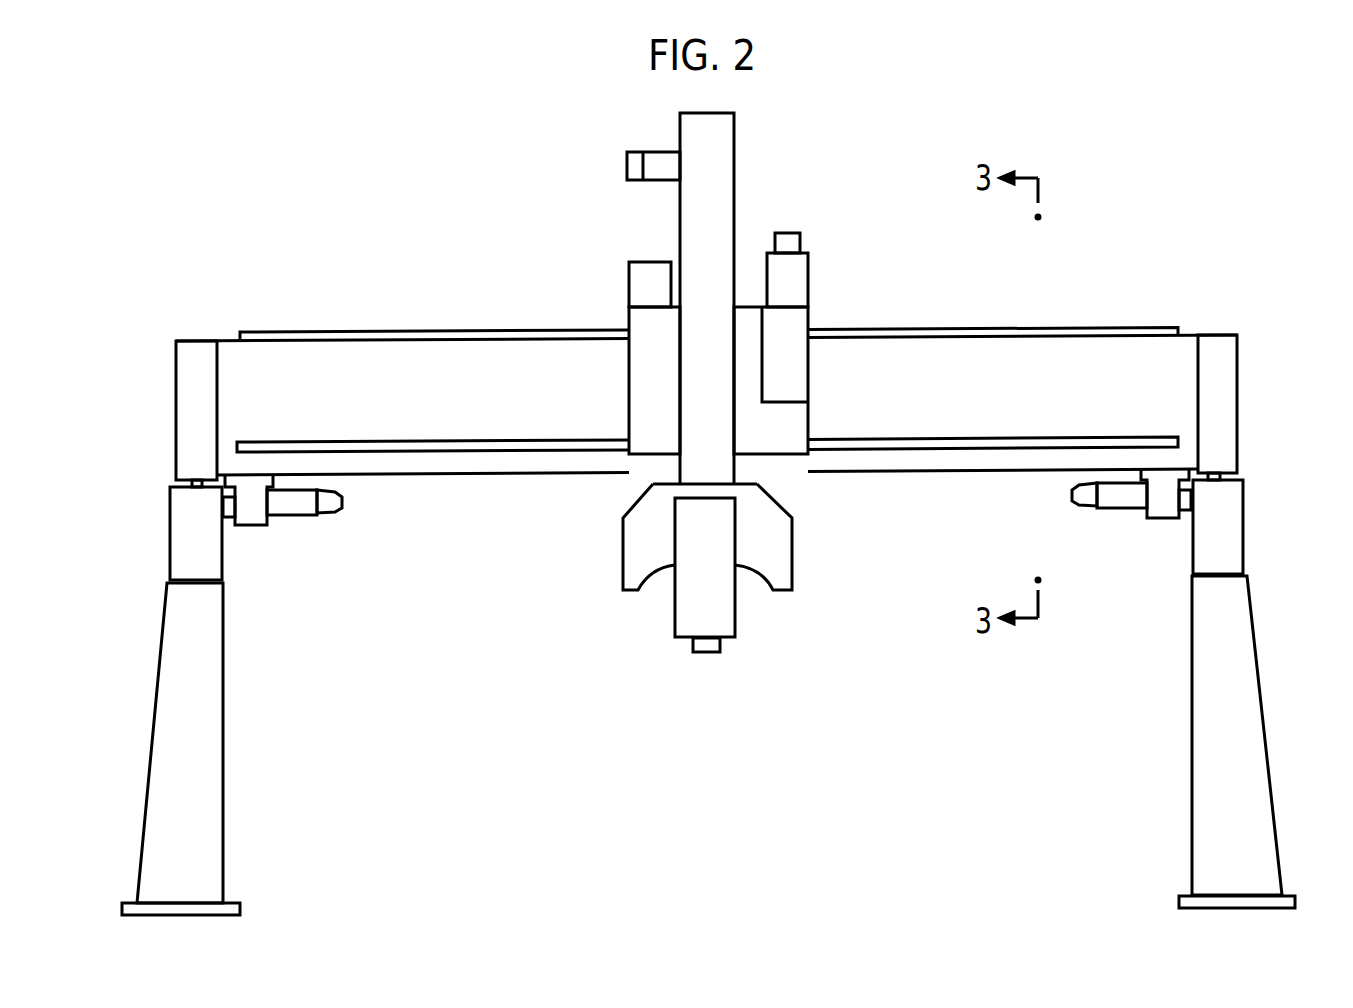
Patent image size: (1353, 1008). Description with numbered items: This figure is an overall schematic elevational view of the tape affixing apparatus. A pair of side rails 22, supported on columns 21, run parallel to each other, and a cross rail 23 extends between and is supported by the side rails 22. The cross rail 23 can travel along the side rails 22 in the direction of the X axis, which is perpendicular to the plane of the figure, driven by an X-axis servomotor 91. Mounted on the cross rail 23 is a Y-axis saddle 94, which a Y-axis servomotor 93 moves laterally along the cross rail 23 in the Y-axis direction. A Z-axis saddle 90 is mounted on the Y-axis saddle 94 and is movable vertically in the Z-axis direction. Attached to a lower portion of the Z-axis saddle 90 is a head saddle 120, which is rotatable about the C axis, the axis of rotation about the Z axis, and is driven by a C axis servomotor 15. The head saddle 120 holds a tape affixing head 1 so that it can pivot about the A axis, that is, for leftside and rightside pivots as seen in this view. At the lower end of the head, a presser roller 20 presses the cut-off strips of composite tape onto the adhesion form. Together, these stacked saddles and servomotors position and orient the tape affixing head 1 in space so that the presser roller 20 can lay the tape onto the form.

The tape affixing head 1 is at (680, 625).
The C axis servomotor 15 is at (633, 160).
The presser roller 20 is at (720, 644).
The columns 21 is at (218, 820).
The side rails 22 is at (178, 548).
The cross rail 23 is at (282, 350).
The Z-axis saddle 90 is at (740, 121).
The X-axis servomotor 91 is at (343, 509).
The Y-axis servomotor 93 is at (793, 263).
The Y-axis saddle 94 is at (788, 445).
The head saddle 120 is at (624, 521).